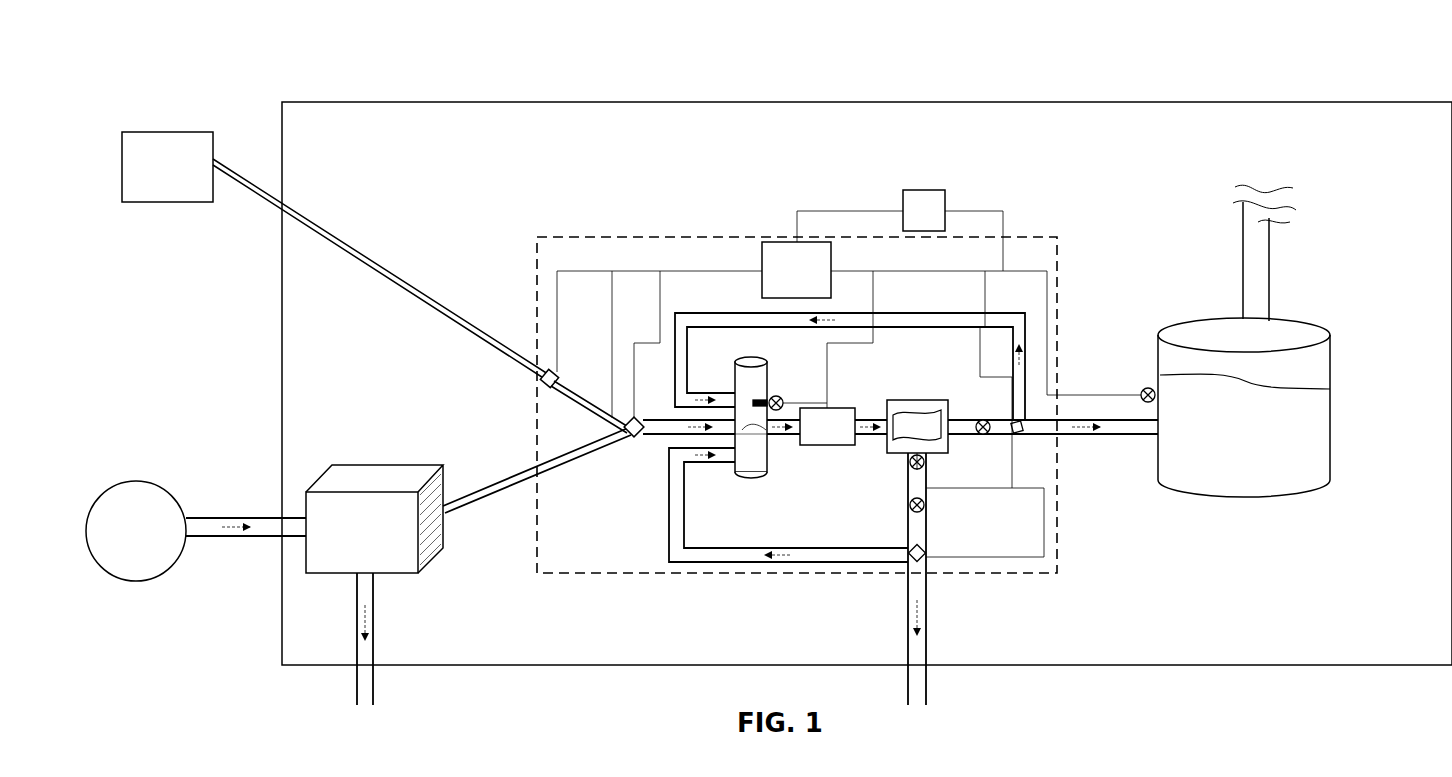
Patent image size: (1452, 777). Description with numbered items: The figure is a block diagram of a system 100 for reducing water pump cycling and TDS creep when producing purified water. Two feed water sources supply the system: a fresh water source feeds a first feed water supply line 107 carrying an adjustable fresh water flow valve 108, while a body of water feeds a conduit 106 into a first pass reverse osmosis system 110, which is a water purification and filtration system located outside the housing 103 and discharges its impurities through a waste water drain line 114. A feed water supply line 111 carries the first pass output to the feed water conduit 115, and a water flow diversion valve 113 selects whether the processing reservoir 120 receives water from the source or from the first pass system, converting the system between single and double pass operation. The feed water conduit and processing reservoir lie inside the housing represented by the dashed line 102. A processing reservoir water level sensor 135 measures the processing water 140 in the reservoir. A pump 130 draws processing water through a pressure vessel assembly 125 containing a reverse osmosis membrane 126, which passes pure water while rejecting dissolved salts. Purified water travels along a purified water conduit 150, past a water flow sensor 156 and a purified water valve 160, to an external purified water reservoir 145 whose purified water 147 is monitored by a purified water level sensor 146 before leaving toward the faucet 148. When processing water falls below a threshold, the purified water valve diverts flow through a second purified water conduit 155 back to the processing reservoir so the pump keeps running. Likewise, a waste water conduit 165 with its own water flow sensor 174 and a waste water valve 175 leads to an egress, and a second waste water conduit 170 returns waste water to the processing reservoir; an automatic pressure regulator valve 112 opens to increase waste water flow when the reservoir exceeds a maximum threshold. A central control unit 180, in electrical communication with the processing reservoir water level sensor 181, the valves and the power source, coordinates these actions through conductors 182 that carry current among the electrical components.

The system 100 is at (256, 68).
The housing 102 is at (1022, 237).
The housing 103 is at (482, 101).
The conduit 106 is at (216, 516).
The first feed water supply line 107 is at (425, 300).
The adjustable fresh water flow valve 108 is at (543, 384).
The first pass reverse osmosis system 110 is at (305, 548).
The feed water supply line 111 is at (485, 505).
The automatic pressure regulator valve 112 is at (912, 468).
The water flow diversion valve 113 is at (632, 438).
The waste water drain line 114 is at (376, 600).
The feed water conduit 115 is at (668, 436).
The processing reservoir 120 is at (750, 480).
The pressure vessel assembly 125 is at (940, 400).
The reverse osmosis membrane 126 is at (907, 461).
The pump 130 is at (836, 408).
The processing reservoir water level sensor 135 is at (779, 396).
The processing water 140 is at (760, 435).
The purified water reservoir 145 is at (1332, 455).
The purified water level sensor 146 is at (1142, 390).
The purified water 147 is at (1322, 378).
The faucet 148 is at (1270, 292).
The purified water conduit 150 is at (1105, 437).
The second purified water conduit 155 is at (960, 313).
The water flow sensor 156 is at (980, 436).
The purified water valve 160 is at (1015, 436).
The waste water conduit 165 is at (928, 588).
The second waste water conduit 170 is at (752, 565).
The water flow sensor 174 is at (908, 505).
The waste water valve 175 is at (926, 553).
The central control unit 180 is at (770, 241).
The processing reservoir water level sensor 181 is at (920, 189).
The conductors 182 is at (700, 270).